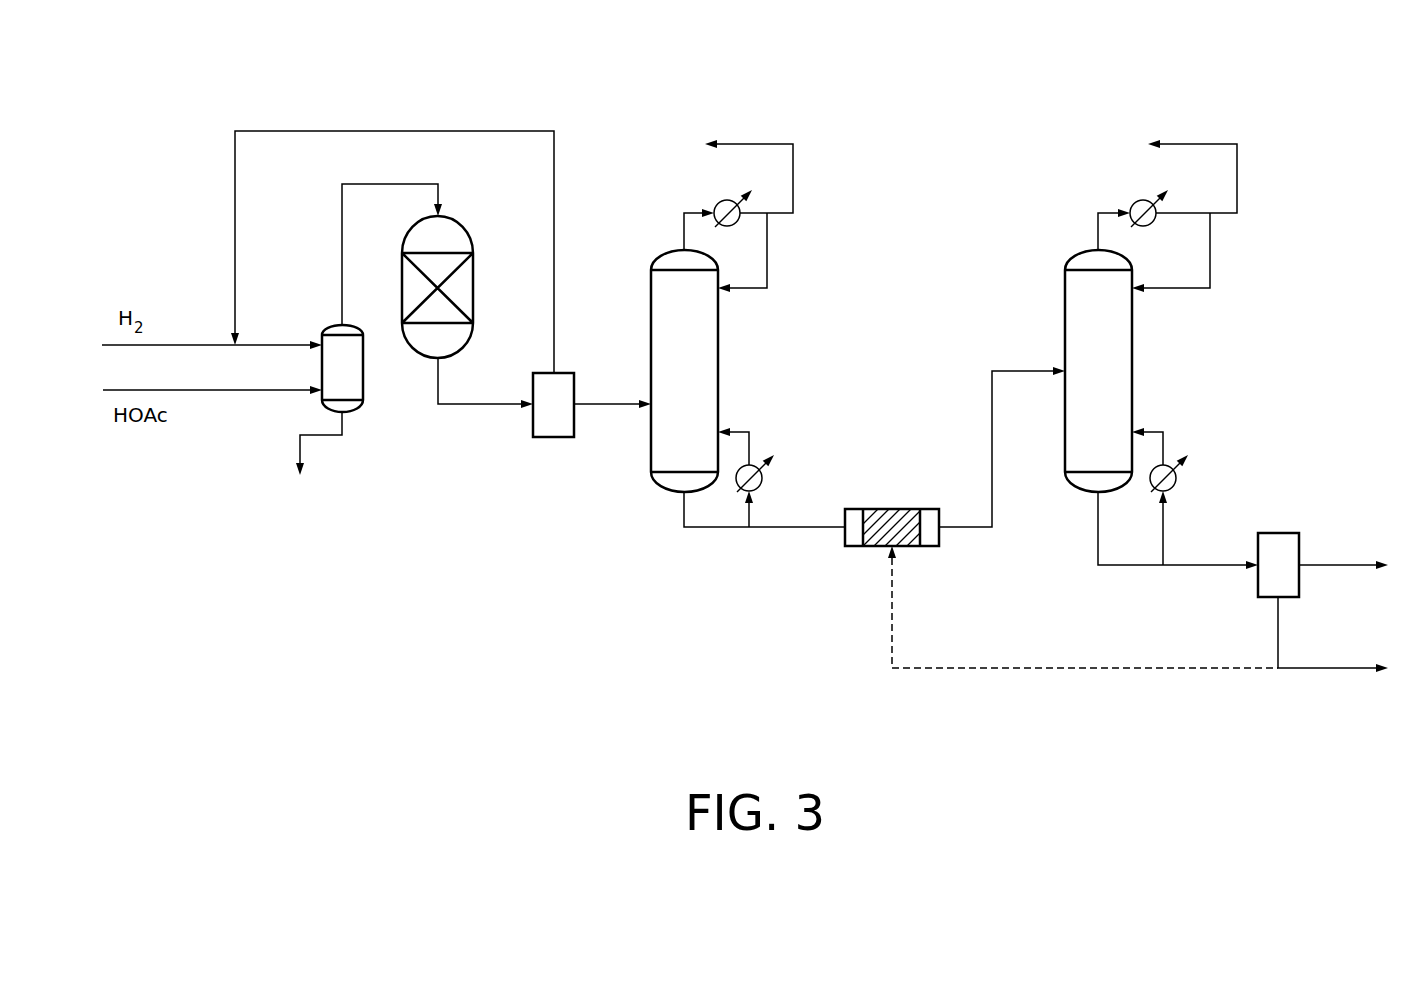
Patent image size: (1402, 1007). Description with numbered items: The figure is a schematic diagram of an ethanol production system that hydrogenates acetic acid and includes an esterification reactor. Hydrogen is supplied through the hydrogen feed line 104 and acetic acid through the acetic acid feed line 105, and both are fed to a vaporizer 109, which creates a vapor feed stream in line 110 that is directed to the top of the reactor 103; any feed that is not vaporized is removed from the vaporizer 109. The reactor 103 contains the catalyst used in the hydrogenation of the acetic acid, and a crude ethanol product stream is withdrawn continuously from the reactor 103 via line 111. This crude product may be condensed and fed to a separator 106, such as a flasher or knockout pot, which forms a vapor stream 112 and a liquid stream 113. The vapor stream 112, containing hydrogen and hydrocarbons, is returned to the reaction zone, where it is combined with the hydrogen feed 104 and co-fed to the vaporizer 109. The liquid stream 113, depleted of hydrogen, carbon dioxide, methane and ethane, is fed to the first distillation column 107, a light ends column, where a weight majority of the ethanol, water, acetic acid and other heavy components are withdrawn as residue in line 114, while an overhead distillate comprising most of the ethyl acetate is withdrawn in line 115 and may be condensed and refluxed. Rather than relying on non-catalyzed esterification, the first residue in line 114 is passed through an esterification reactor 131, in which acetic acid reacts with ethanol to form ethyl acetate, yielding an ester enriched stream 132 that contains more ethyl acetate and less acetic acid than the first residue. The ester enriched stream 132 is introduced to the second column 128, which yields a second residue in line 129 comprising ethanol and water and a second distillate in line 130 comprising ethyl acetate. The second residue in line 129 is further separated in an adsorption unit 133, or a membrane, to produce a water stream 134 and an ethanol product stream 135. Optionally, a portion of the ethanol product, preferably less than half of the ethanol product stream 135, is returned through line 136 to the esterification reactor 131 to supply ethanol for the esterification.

The reactor 103 is at (457, 233).
The hydrogen feed line 104 is at (177, 347).
The acetic acid feed line 105 is at (190, 392).
The separator 106 is at (558, 385).
The first distillation column 107 is at (700, 358).
The vaporizer 109 is at (353, 405).
The vapor feed stream 110 is at (363, 185).
The crude ethanol product stream 111 is at (477, 407).
The vapor stream 112 is at (556, 152).
The liquid stream 113 is at (607, 407).
The first residue line 114 is at (715, 527).
The overhead distillate line 115 is at (767, 145).
The second column 128 is at (1115, 358).
The second residue line 129 is at (1135, 565).
The second distillate line 130 is at (1213, 143).
The esterification reactor 131 is at (890, 508).
The ester enriched stream 132 is at (990, 412).
The adsorption unit 133 is at (1277, 537).
The water stream 134 is at (1335, 563).
The ethanol product stream 135 is at (1333, 670).
The ethanol product portion line 136 is at (1012, 670).